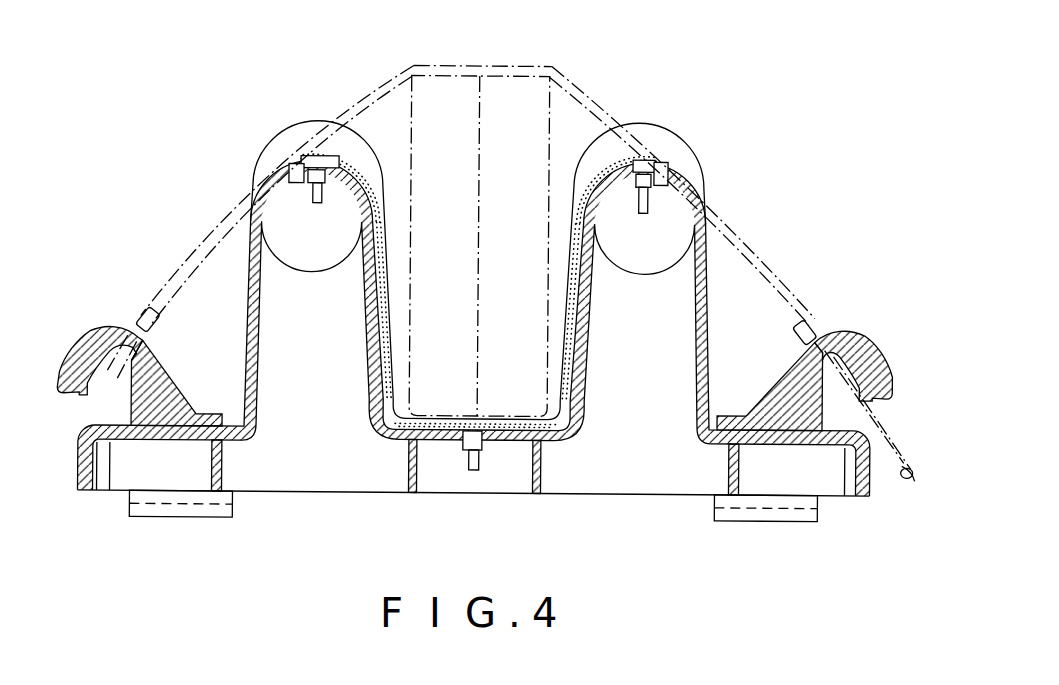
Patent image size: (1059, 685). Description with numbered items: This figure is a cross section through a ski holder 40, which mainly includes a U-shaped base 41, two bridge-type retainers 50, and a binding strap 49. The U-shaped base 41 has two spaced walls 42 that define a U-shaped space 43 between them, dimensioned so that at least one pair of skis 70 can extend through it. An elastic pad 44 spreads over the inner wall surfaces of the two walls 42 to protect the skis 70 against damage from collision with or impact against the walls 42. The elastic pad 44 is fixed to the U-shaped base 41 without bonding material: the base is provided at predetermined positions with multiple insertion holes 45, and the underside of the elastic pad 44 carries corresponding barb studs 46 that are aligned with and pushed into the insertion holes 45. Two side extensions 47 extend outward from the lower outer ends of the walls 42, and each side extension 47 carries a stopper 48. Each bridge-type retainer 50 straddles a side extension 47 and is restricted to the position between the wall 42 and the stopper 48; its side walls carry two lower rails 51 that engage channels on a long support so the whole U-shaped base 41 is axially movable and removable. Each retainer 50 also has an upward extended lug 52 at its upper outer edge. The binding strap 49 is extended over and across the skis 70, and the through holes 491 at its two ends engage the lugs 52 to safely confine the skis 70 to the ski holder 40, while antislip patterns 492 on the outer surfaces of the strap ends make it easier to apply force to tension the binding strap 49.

The ski holder 40 is at (716, 110).
The U-shaped base 41 is at (711, 313).
The wall 42 is at (312, 121).
The U-shaped space 43 is at (396, 133).
The elastic pad 44 is at (566, 263).
The insertion hole 45 is at (291, 161).
The barb stud 46 is at (308, 186).
The side extension 47 is at (80, 454).
The stopper 48 is at (111, 449).
The binding strap 49 is at (753, 258).
The through hole 491 is at (134, 322).
The antislip pattern 492 is at (897, 478).
The bridge-type retainer 50 is at (168, 391).
The lower rail 51 is at (188, 522).
The lug 52 is at (106, 332).
The ski 70 is at (497, 97).